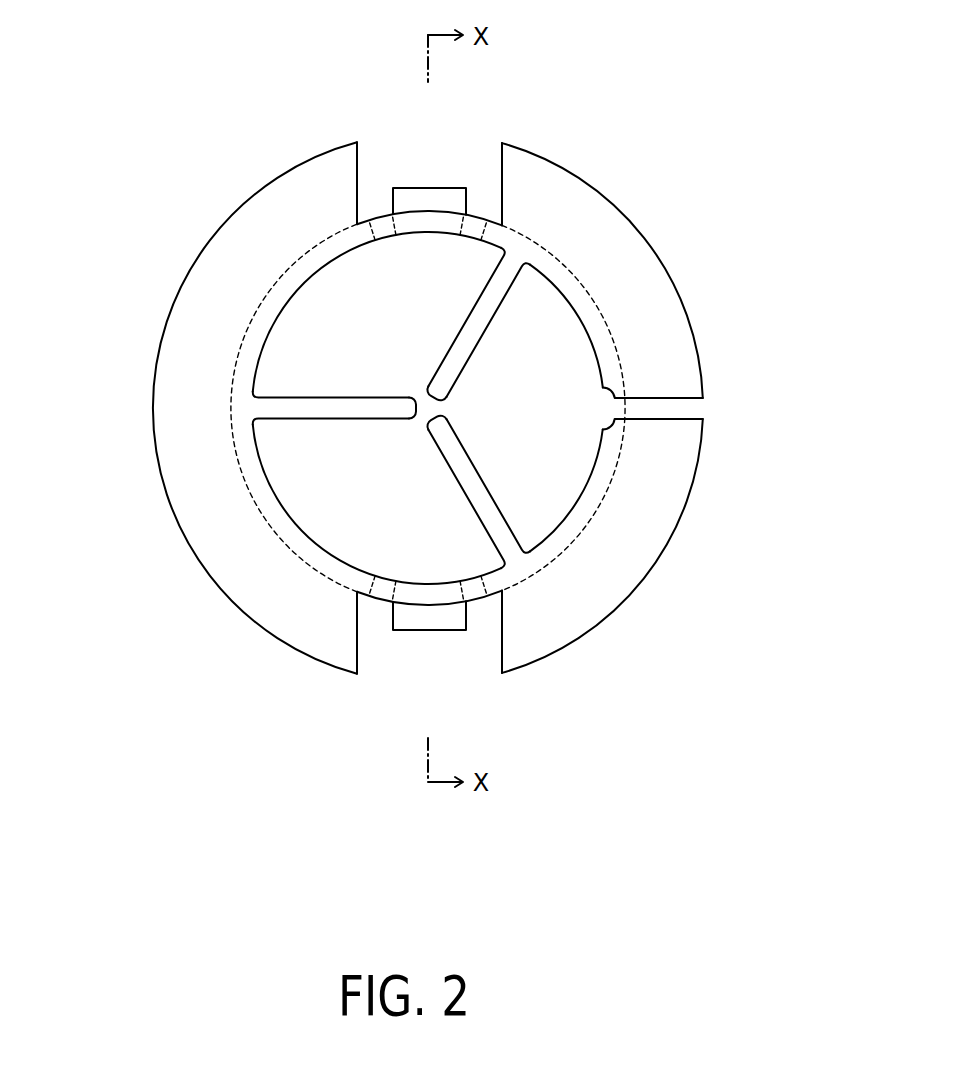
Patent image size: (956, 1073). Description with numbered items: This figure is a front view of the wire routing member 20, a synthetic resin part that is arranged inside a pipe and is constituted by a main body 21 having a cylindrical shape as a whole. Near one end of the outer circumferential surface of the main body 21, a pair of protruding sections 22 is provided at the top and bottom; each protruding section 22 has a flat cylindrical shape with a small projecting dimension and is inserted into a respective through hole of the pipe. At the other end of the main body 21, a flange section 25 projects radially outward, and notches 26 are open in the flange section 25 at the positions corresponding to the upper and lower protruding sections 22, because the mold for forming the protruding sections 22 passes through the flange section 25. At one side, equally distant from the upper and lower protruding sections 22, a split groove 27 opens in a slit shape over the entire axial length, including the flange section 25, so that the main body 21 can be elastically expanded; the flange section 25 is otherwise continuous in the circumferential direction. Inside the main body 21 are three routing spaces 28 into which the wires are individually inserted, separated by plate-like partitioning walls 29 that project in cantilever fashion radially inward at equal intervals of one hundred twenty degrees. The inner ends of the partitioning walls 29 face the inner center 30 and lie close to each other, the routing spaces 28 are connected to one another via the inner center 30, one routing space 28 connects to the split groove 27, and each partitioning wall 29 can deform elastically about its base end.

The wire routing member 20 is at (318, 157).
The main body 21 is at (377, 602).
The protruding sections 22 is at (407, 192).
The flange section 25 is at (207, 282).
The notches 26 is at (502, 176).
The split groove 27 is at (613, 396).
The routing spaces 28 is at (352, 317).
The partitioning walls 29 is at (482, 340).
The inner center 30 is at (430, 410).